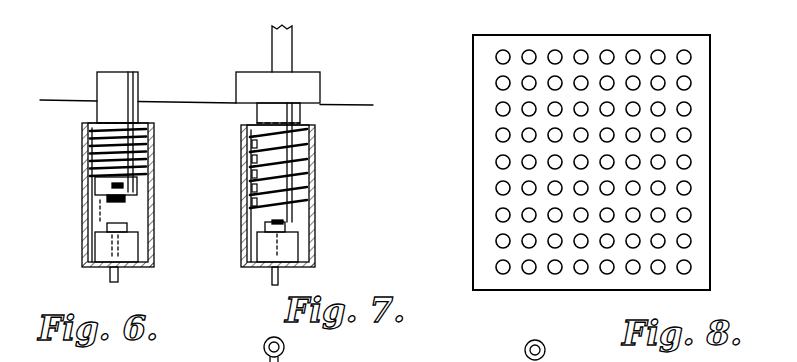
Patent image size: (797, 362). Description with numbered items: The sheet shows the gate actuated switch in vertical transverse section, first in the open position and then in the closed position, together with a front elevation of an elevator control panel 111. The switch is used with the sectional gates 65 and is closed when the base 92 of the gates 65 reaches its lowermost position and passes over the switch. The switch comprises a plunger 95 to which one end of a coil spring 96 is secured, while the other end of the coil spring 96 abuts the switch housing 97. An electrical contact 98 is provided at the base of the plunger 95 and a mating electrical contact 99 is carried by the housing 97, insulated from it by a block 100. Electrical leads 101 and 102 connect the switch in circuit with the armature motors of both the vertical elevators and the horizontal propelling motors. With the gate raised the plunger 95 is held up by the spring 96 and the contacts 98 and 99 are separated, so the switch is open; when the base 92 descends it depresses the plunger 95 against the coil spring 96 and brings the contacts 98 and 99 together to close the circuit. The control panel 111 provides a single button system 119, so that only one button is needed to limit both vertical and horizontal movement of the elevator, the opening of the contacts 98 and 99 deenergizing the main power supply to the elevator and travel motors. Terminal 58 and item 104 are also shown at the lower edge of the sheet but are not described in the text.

In FIG. 7, the terminal 58 is at (284, 347).
In FIG. 7, the sectional gates 65 is at (288, 48).
In FIG. 7, the base of the gates 92 is at (315, 87).
In FIG. 6, the plunger 95 is at (130, 110).
In FIG. 7, the plunger 95 is at (285, 160).
In FIG. 6, the coil spring 96 is at (87, 175).
In FIG. 7, the coil spring 96 is at (310, 135).
In FIG. 6, the switch housing 97 is at (103, 122).
In FIG. 6, the electrical contact 98 is at (125, 200).
In FIG. 6, the electrical contact 99 is at (127, 222).
In FIG. 6, the block 100 is at (103, 246).
In FIG. 7, the block 100 is at (293, 248).
In FIG. 6, the electrical lead 101 is at (123, 186).
In FIG. 7, the electrical lead 101 is at (284, 222).
In FIG. 6, the electrical lead 102 is at (119, 275).
In FIG. 7, the electrical lead 102 is at (270, 277).
In FIG. 7, the circuit board 104 is at (386, 351).
In FIG. 8, the control panel 111 is at (707, 78).
In FIG. 8, the single button system 119 is at (496, 57).